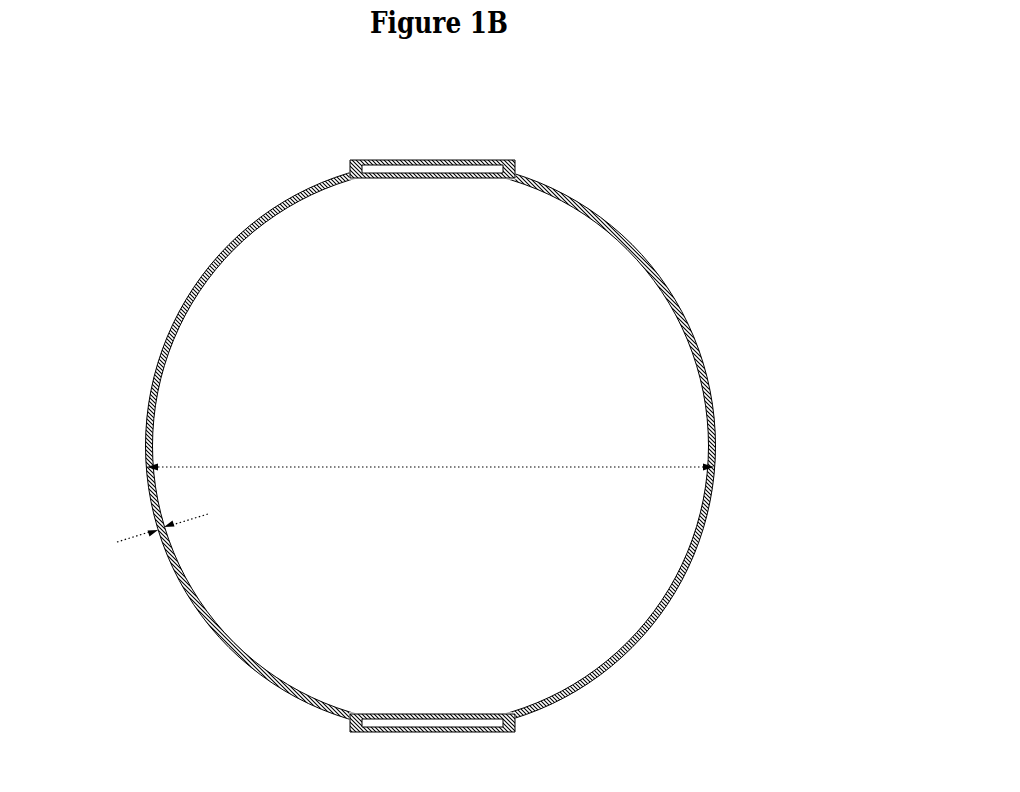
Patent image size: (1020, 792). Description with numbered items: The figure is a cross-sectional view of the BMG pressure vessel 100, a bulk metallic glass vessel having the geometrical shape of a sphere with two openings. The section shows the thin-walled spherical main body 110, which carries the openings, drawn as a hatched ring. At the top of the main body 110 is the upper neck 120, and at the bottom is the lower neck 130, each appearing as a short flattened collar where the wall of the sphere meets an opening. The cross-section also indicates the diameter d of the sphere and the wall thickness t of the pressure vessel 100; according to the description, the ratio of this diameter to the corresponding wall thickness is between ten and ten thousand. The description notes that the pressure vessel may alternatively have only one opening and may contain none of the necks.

The BMG pressure vessel 100 is at (132, 118).
The main body 110 is at (727, 400).
The upper neck 120 is at (530, 168).
The lower neck 130 is at (534, 724).